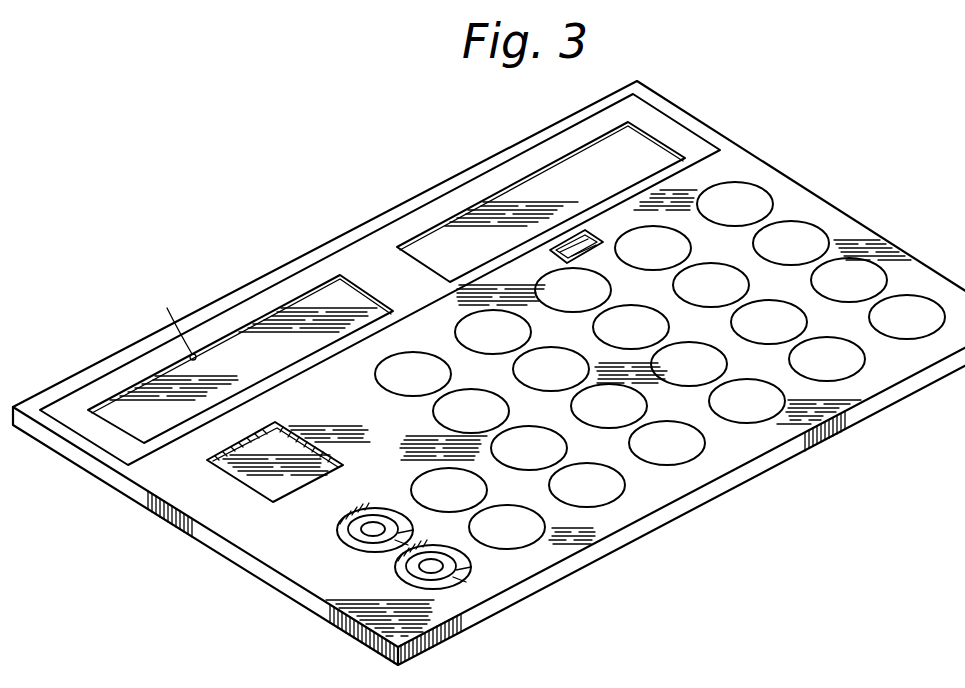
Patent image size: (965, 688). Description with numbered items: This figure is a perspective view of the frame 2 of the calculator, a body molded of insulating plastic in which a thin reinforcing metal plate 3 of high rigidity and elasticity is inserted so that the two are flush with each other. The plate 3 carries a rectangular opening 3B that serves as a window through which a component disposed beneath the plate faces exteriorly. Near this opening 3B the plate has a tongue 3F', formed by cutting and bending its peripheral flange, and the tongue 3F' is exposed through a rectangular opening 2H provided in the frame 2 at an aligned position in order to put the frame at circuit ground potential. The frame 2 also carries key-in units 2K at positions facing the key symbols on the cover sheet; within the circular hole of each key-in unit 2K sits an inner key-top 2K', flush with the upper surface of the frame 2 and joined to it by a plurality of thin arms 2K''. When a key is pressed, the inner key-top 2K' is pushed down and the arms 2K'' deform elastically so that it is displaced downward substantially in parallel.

The frame 2 is at (185, 503).
The reinforcing metal plate 3 is at (373, 270).
The rectangular opening 3B is at (447, 222).
The tongue 3F' is at (573, 219).
The rectangular opening 2H is at (591, 239).
The key-in unit 2K is at (423, 570).
The inner key-top 2K' is at (420, 597).
The thin arms 2K'' is at (394, 518).